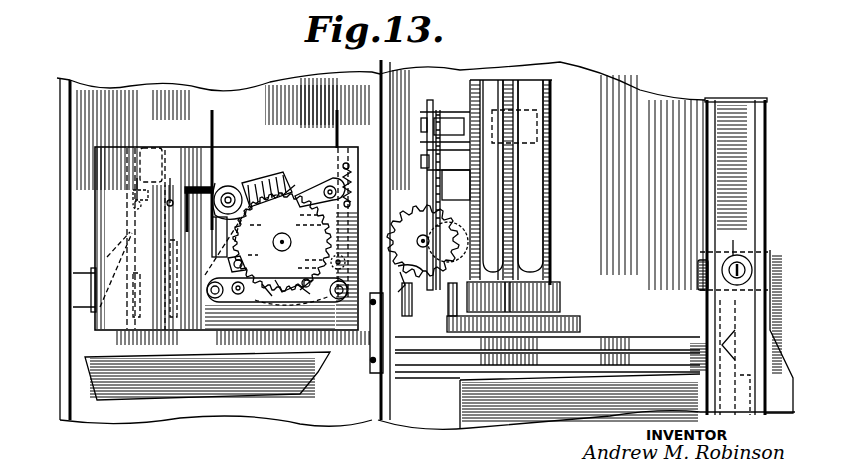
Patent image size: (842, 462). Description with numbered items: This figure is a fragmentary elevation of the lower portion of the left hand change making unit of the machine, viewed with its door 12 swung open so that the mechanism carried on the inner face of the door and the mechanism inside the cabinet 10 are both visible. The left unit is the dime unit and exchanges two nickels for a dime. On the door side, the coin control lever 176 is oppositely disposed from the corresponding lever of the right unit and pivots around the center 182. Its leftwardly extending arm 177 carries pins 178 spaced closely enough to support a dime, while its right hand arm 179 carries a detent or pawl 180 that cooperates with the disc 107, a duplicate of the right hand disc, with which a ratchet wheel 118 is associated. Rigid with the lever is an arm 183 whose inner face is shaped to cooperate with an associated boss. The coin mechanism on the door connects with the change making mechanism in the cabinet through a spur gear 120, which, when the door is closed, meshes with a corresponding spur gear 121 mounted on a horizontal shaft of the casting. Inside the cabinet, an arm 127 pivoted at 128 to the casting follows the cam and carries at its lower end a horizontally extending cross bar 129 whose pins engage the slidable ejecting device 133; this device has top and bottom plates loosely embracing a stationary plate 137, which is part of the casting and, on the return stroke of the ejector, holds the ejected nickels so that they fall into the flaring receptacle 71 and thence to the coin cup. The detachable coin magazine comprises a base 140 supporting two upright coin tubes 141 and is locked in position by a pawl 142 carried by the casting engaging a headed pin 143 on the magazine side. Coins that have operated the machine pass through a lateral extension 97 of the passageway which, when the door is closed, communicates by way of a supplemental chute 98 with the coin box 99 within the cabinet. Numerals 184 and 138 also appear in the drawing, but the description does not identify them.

The cabinet 10 is at (660, 102).
The door 12 is at (68, 225).
The lateral extension 97 is at (90, 310).
The flaring receptacle 71 is at (300, 375).
The pins 178 is at (170, 206).
The leftwardly extending arm 177 is at (192, 190).
The center 182 is at (232, 190).
The coin control lever 176 is at (240, 182).
The right hand arm 179 is at (285, 193).
The detent 180 is at (300, 192).
The bracket 184 is at (208, 235).
The spur gear 120 is at (268, 242).
The arm 183 is at (226, 257).
The disc 107 is at (255, 295).
The ratchet wheel 118 is at (300, 292).
The pawl 142 is at (425, 112).
The headed pin 143 is at (450, 120).
The pivot 128 is at (421, 162).
The arm 127 is at (455, 194).
The spur gear 121 is at (400, 281).
The coin tubes 141 is at (553, 160).
The base 140 is at (560, 290).
The cross bar 129 is at (582, 300).
The ejecting device 133 is at (600, 318).
The stationary plate 137 is at (624, 340).
The bar 138 is at (450, 372).
The coin box 99 is at (487, 425).
The supplemental chute 98 is at (718, 327).